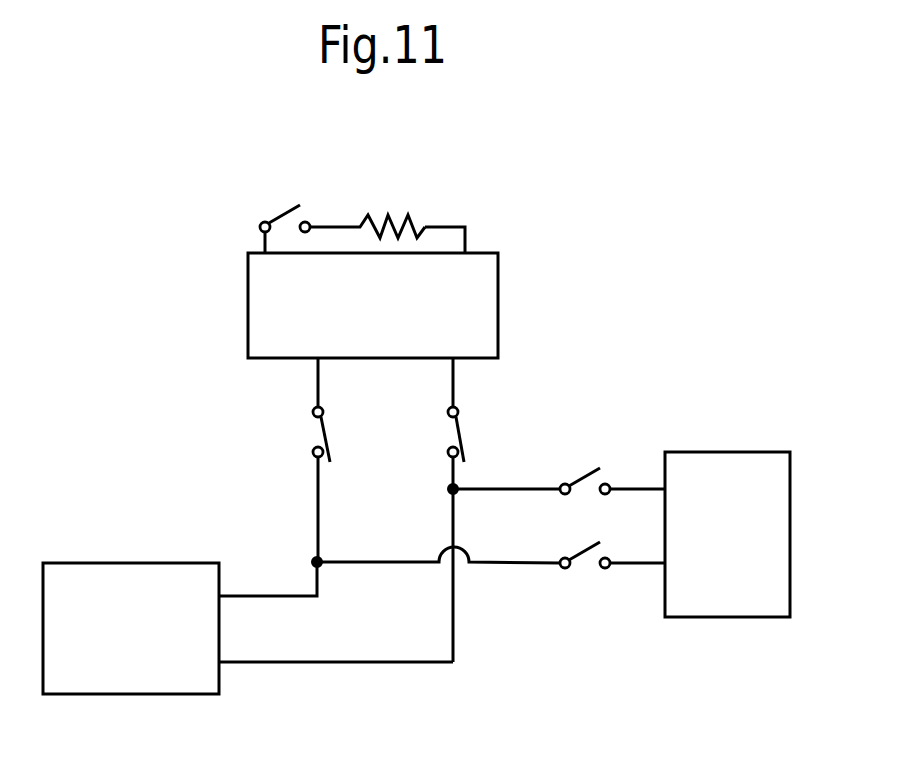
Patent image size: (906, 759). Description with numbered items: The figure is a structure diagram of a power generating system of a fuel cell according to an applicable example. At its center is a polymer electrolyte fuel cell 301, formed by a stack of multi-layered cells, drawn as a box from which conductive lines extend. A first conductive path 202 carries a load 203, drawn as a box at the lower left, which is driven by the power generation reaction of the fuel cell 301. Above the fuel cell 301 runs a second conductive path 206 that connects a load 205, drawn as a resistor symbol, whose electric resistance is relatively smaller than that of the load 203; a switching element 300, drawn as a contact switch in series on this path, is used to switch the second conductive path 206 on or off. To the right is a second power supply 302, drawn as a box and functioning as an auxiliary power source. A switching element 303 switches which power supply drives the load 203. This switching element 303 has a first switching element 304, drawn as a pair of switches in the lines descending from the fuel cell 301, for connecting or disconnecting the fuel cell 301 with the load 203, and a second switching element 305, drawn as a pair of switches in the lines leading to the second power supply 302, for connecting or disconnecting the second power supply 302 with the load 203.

The switching element 300 is at (276, 211).
The load 205 is at (415, 218).
The second conductive path 206 is at (465, 238).
The polymer electrolyte fuel cell 301 is at (498, 292).
The second power supply 302 is at (727, 452).
The switching element 303 is at (427, 510).
The first switching element 304 is at (324, 431).
The second switching element 305 is at (588, 473).
The load 203 is at (147, 563).
The first conductive path 202 is at (272, 596).